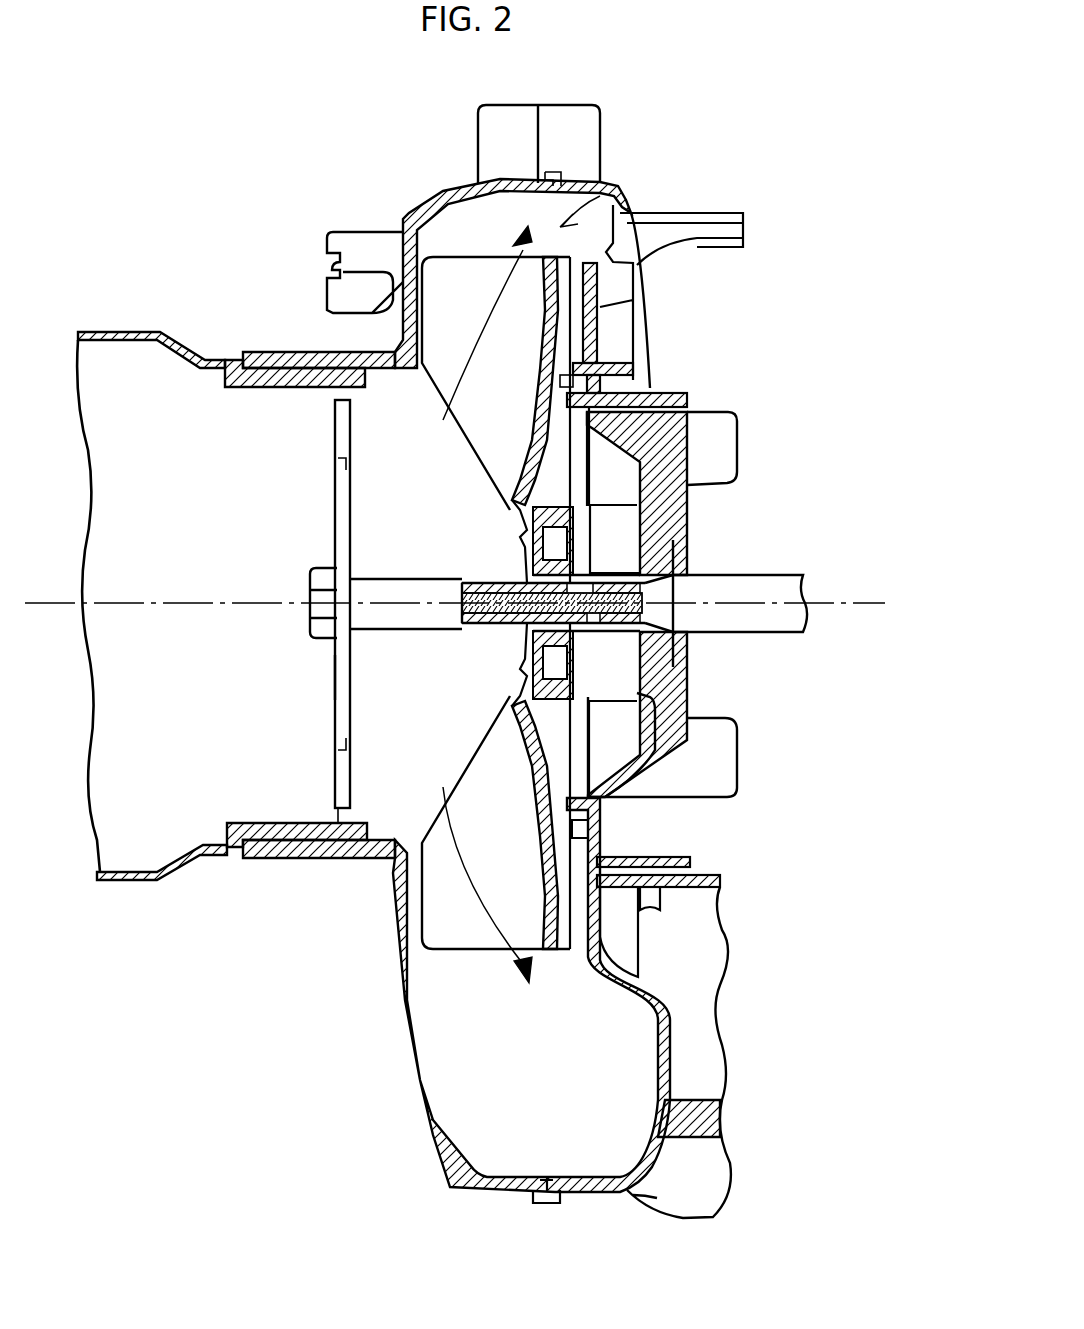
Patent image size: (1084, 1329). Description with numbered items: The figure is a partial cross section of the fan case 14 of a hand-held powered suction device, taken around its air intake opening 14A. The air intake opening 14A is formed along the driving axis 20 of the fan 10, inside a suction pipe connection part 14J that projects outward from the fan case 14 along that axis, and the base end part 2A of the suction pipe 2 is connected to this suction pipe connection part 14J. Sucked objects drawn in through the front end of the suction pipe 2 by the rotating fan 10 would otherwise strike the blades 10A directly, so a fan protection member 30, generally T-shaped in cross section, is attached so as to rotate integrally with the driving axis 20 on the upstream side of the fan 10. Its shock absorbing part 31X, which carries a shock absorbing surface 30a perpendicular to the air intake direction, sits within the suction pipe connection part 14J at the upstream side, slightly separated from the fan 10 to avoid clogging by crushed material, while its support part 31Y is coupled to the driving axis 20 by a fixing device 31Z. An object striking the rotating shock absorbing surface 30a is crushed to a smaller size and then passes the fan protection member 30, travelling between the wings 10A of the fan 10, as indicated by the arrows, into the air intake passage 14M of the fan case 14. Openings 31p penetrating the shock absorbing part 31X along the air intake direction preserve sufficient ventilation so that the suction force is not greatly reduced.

The suction pipe 2 is at (117, 333).
The base end part of the suction pipe 2A is at (262, 388).
The fan 10 is at (452, 649).
The blade of the fan 10A is at (574, 603).
The fan case 14 is at (420, 203).
The air intake opening 14A is at (303, 440).
The suction pipe connection part 14J is at (280, 352).
The air intake passage 14M is at (600, 196).
The driving axis 20 is at (627, 588).
The fan protection member 30 is at (307, 772).
The shock absorbing surface 30a is at (330, 675).
The opening 31p is at (337, 462).
The shock absorbing part 31X is at (343, 820).
The support part 31Y is at (407, 579).
The fixing device 31Z is at (307, 627).